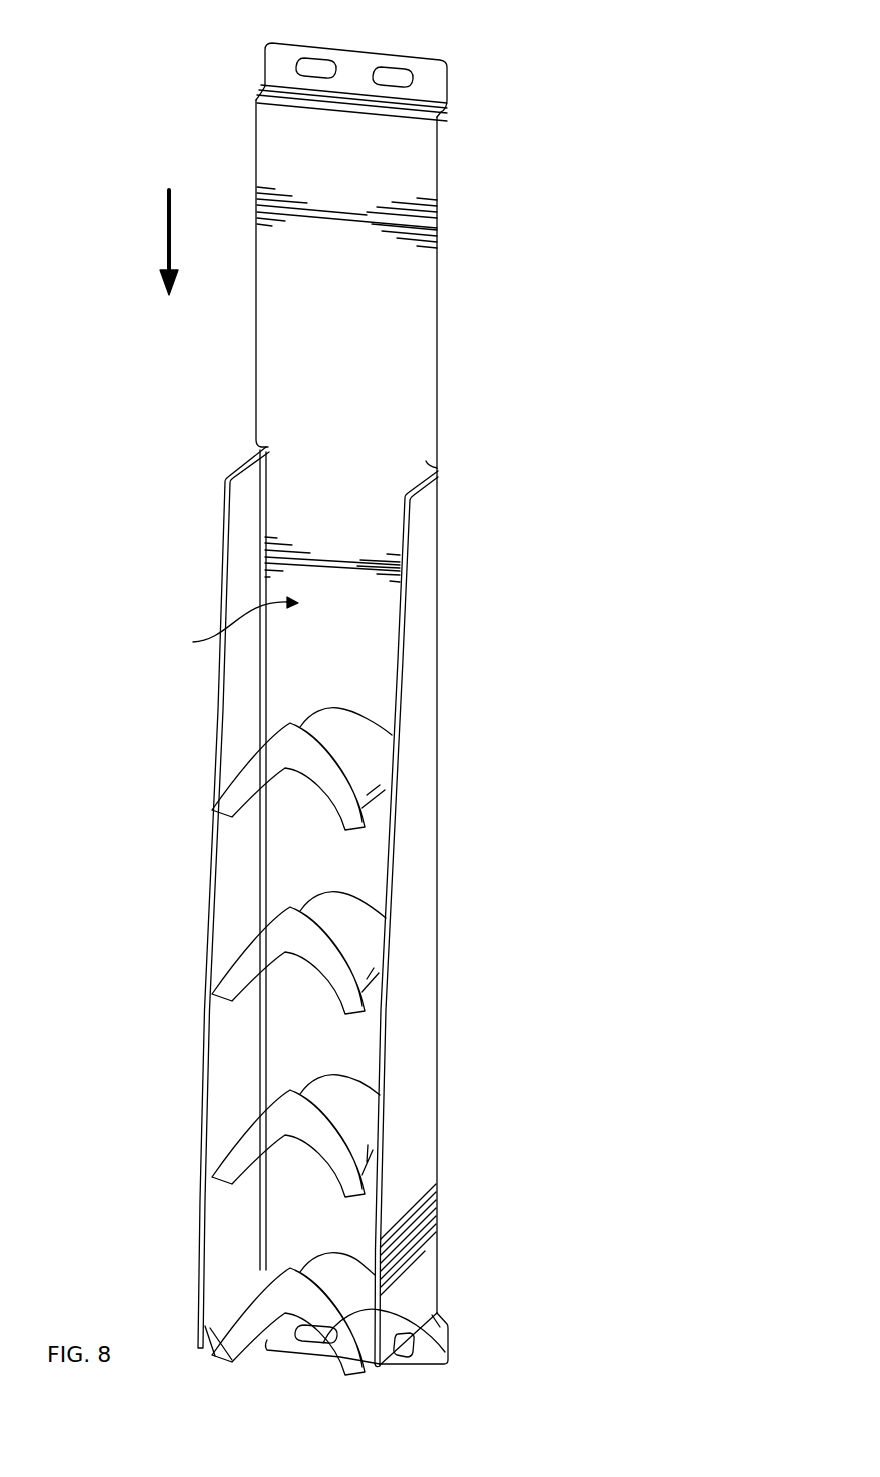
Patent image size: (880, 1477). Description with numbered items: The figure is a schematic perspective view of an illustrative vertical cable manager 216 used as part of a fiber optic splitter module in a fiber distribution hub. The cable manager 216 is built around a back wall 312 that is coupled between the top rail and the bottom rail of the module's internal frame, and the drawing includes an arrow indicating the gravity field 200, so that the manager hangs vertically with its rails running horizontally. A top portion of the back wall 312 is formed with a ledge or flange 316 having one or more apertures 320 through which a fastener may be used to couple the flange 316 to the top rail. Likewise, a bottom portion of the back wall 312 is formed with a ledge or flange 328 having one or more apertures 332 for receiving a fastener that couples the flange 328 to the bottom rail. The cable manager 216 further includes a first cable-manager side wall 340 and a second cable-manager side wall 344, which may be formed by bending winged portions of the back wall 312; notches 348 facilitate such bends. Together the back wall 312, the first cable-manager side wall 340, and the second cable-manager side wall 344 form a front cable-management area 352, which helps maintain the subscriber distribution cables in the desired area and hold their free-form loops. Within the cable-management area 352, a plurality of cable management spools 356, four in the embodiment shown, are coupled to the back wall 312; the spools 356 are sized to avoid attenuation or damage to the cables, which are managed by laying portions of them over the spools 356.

The gravity field 200 is at (164, 232).
The cable manager 216 is at (272, 354).
The back wall 312 is at (265, 134).
The flange 316 is at (447, 63).
The apertures 320 is at (393, 79).
The flange 328 is at (450, 1328).
The apertures 332 is at (445, 1352).
The first cable-manager side wall 340 is at (221, 536).
The second cable-manager side wall 344 is at (423, 640).
The notches 348 is at (430, 462).
The front cable-management area 352 is at (272, 598).
The cable management spools 356 is at (350, 717).